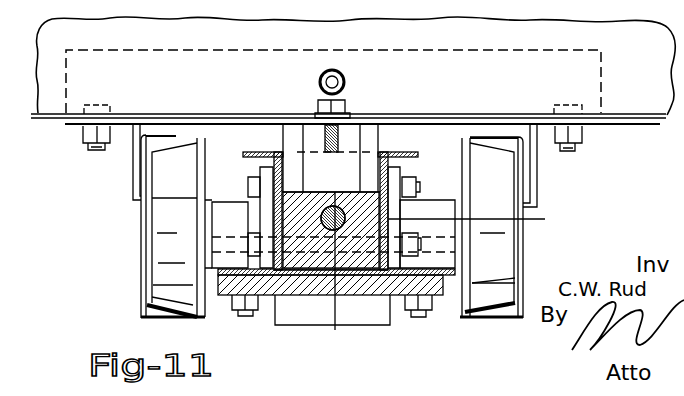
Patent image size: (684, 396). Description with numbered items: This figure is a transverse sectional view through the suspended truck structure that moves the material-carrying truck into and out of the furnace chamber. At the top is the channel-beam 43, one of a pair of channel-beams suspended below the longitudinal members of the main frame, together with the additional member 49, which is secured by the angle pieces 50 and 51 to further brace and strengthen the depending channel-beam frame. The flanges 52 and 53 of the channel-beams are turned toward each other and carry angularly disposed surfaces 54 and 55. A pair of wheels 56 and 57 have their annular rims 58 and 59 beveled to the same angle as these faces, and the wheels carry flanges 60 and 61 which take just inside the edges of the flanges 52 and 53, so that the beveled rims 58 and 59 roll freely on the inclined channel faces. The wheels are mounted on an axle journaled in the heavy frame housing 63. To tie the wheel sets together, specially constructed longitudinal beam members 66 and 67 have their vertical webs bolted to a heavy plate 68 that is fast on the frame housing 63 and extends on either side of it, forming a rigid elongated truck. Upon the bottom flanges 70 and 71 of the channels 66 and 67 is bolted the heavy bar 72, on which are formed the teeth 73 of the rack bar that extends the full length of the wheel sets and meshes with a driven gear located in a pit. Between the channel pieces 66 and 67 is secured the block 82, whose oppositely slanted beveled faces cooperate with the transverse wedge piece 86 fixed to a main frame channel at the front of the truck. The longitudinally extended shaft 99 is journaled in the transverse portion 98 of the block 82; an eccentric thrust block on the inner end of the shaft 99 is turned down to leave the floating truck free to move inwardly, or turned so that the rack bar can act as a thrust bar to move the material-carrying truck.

The channel-beam 43 is at (142, 289).
The additional member 49 is at (602, 80).
The angle piece 50 is at (537, 160).
The angle piece 51 is at (133, 160).
The flange 52 is at (513, 328).
The flange 53 is at (157, 320).
The angularly disposed surface 54 is at (489, 136).
The angularly disposed surface 55 is at (173, 132).
The wheel 56 is at (518, 263).
The wheel 57 is at (145, 271).
The annular rim 58 is at (500, 242).
The annular rim 59 is at (157, 253).
The wheel flange 60 is at (472, 300).
The wheel flange 61 is at (200, 198).
The frame housing 63 is at (225, 203).
The longitudinal beam member 66 is at (500, 218).
The longitudinal beam member 67 is at (262, 150).
The heavy plate 68 is at (403, 183).
The bottom flange 70 is at (455, 276).
The bottom flange 71 is at (213, 273).
The heavy bar 72 is at (390, 284).
The teeth 73 is at (365, 317).
The block 82 is at (302, 145).
The transverse wedge piece 86 is at (363, 135).
The transverse portion 98 is at (358, 198).
The shaft 99 is at (334, 272).